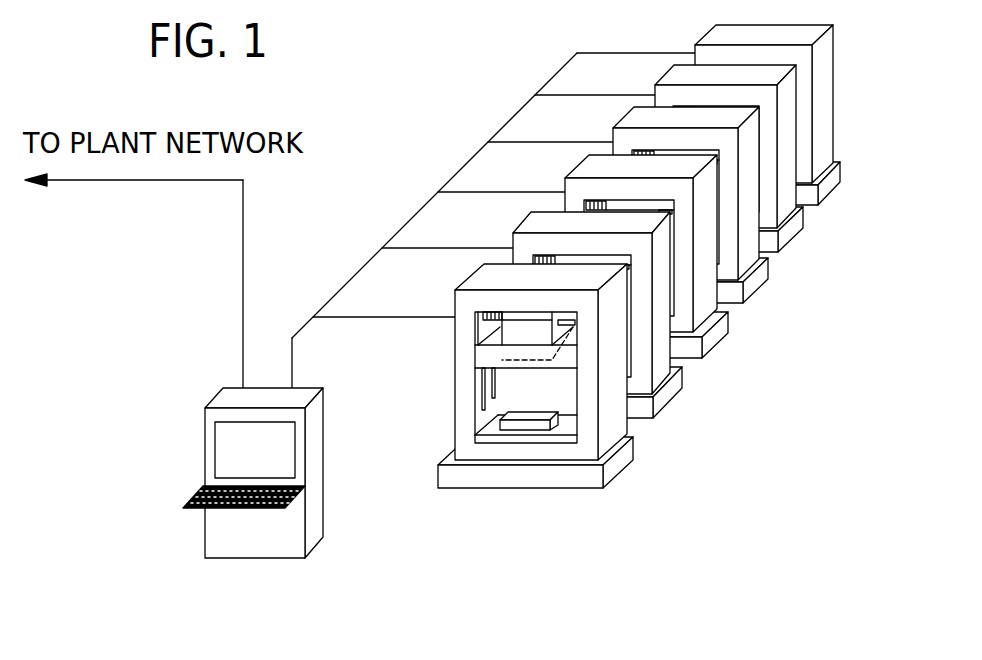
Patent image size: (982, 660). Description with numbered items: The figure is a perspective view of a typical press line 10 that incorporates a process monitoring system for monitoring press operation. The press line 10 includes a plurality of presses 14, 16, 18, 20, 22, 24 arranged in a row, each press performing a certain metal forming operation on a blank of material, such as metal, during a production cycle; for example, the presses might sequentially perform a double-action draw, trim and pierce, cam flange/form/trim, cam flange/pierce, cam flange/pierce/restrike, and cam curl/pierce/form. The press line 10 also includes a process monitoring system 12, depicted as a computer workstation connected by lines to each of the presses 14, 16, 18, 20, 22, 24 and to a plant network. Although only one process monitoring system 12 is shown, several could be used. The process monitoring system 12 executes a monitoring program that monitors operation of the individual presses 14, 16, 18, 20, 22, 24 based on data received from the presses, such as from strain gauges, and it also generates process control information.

The press line 10 is at (414, 100).
The process monitoring system 12 is at (312, 532).
The press 14 is at (613, 468).
The press 16 is at (658, 400).
The press 18 is at (708, 340).
The press 20 is at (748, 285).
The press 22 is at (787, 237).
The press 24 is at (822, 190).